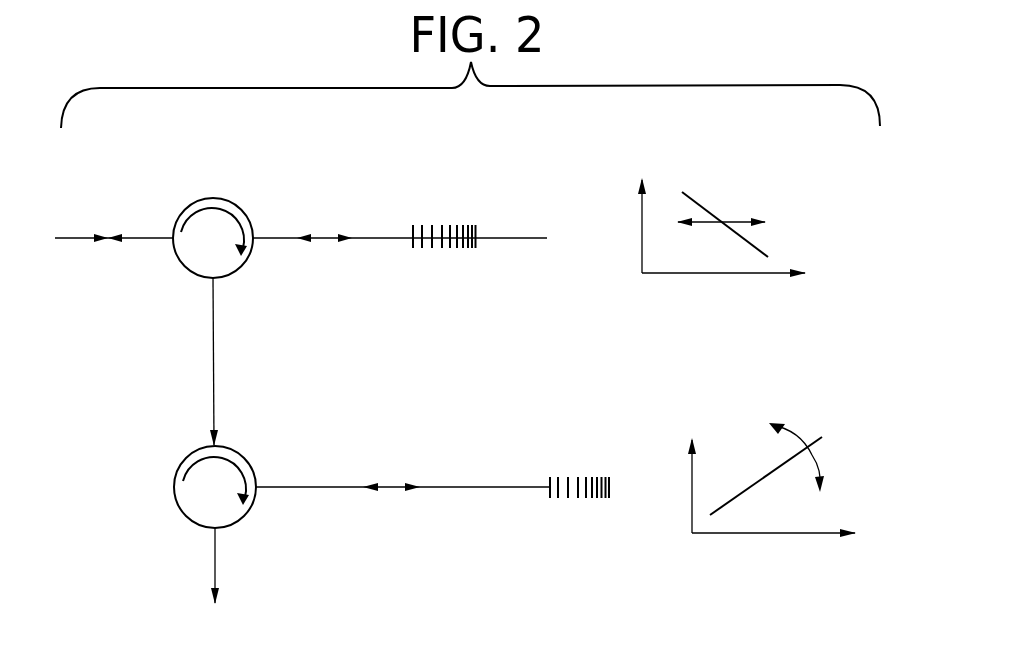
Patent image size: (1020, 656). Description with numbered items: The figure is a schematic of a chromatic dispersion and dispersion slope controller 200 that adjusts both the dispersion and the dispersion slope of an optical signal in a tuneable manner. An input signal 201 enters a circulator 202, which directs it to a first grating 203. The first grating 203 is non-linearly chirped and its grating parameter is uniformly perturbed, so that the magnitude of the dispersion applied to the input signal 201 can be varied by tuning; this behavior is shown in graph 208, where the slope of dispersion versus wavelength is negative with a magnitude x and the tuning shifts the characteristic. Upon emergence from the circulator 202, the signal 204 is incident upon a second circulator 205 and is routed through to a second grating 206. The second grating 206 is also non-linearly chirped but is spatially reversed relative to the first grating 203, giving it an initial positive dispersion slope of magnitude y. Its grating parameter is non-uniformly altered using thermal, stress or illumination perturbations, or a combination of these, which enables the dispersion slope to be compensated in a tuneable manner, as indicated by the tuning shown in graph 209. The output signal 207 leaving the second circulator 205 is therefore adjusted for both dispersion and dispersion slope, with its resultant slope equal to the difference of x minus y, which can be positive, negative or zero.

The chromatic dispersion and dispersion slope controller 200 is at (112, 156).
The input signal 201 is at (93, 242).
The circulator 202 is at (214, 196).
The first grating 203 is at (439, 218).
The signal 204 is at (215, 332).
The second circulator 205 is at (240, 450).
The second grating 206 is at (574, 472).
The output signal 207 is at (215, 547).
The graph 208 is at (722, 213).
The graph 209 is at (784, 478).